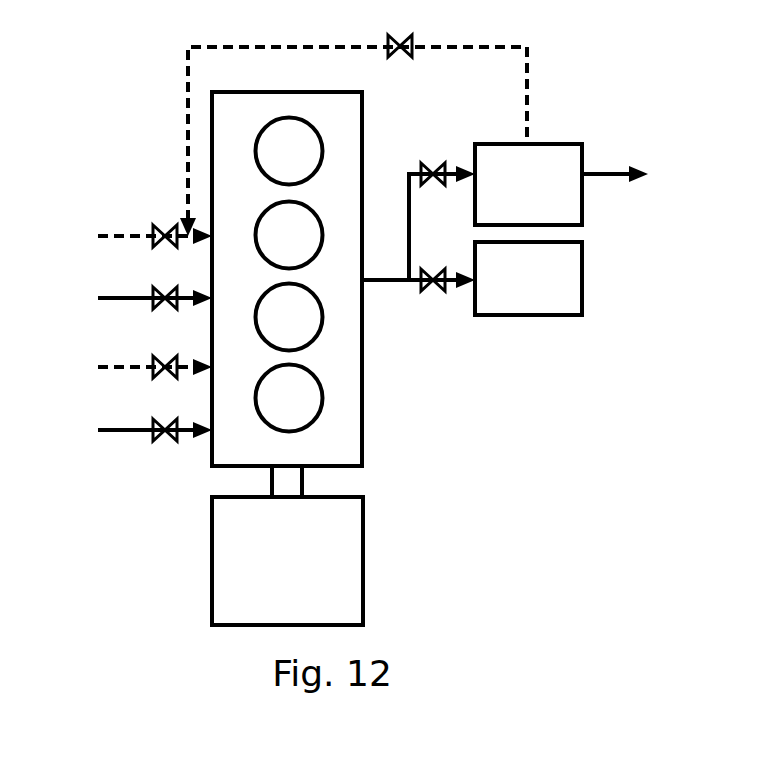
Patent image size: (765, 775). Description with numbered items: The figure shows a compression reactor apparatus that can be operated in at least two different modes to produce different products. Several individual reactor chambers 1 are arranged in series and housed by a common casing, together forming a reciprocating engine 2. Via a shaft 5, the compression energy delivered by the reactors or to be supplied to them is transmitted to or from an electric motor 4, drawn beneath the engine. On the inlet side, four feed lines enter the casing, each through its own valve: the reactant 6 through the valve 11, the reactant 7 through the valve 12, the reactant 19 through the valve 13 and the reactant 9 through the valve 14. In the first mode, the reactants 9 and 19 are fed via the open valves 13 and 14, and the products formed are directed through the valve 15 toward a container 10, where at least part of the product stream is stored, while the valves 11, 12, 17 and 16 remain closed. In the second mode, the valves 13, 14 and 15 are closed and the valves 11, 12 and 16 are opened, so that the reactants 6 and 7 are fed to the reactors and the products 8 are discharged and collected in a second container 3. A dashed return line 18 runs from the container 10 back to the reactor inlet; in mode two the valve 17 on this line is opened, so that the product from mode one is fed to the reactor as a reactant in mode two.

The reactor chambers 1 is at (300, 152).
The reciprocating engine 2 is at (343, 450).
The second container 3 is at (528, 278).
The electric motor 4 is at (323, 578).
The shaft 5 is at (297, 481).
The reactant 6 is at (149, 220).
The reactant 7 is at (150, 280).
The products 8 is at (418, 227).
The reactant 9 is at (150, 417).
The container 10 is at (561, 184).
The valve 11 is at (162, 221).
The valve 12 is at (164, 284).
The valve 13 is at (164, 354).
The valve 14 is at (164, 416).
The valve 15 is at (428, 157).
The valve 16 is at (440, 259).
The valve 17 is at (402, 74).
The recycle line 18 is at (380, 141).
The reactant 19 is at (150, 351).